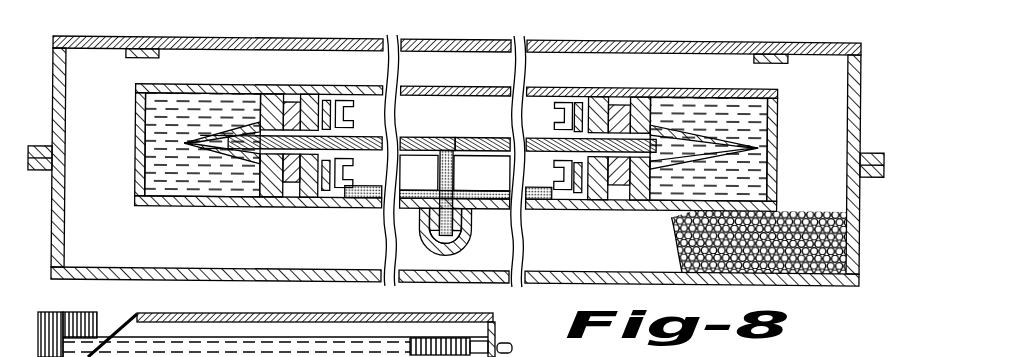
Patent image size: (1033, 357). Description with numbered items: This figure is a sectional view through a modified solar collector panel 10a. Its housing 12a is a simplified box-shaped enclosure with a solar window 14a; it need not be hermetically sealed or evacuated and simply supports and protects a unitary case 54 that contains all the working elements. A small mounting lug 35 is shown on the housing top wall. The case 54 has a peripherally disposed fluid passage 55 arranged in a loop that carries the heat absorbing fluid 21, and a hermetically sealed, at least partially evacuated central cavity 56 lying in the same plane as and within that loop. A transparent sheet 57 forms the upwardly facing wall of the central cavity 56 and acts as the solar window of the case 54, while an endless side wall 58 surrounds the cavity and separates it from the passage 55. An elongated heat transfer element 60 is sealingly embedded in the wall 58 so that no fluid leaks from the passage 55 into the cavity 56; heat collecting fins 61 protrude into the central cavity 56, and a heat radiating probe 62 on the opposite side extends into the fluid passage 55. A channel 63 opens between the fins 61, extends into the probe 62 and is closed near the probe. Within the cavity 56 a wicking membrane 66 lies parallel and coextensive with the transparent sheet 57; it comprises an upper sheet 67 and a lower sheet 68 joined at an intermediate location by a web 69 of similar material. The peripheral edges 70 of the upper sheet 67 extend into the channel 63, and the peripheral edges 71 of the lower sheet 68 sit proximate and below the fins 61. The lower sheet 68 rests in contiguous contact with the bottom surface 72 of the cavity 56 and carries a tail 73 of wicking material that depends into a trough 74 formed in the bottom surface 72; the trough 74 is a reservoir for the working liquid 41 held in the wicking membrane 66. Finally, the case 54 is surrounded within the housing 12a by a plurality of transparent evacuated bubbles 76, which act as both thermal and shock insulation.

The solar collector panel 10a is at (836, 36).
The housing 12a is at (858, 74).
The solar window 14a is at (244, 35).
The mounting lug 35 is at (143, 29).
The heat absorbing fluid 21 is at (140, 181).
The working liquid 41 is at (432, 219).
The unitary case 54 is at (226, 207).
The fluid passage 55 is at (153, 197).
The central cavity 56 is at (472, 88).
The transparent sheet 57 is at (355, 87).
The endless side wall 58 is at (269, 93).
The heat transfer element 60 is at (258, 162).
The heat collecting fins 61 is at (345, 104).
The heat radiating probe 62 is at (180, 142).
The channel 63 is at (344, 129).
The wicking membrane 66 is at (489, 135).
The upper sheet 67 is at (425, 135).
The lower sheet 68 is at (416, 187).
The web 69 is at (455, 162).
The peripheral edges of the upper sheet 70 is at (210, 154).
The peripheral edges of the lower sheet 71 is at (334, 198).
The bottom surface 72 is at (548, 205).
The tail 73 is at (470, 218).
The trough 74 is at (465, 233).
The transparent evacuated bubbles 76 is at (834, 237).